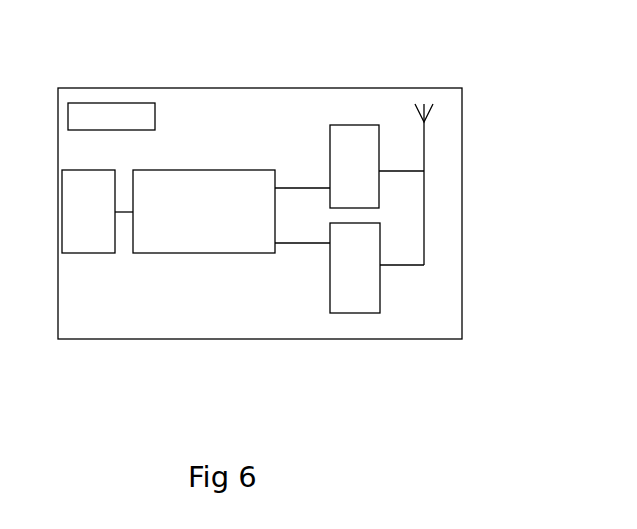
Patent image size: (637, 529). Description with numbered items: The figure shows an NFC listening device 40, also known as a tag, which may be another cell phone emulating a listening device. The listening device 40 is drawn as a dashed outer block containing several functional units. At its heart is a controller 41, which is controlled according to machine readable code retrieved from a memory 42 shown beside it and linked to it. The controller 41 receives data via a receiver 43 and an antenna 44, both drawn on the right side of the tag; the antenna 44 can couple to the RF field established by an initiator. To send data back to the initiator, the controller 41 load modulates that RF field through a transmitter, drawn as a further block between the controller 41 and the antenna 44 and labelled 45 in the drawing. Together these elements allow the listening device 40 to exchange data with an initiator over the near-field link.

The NFC listening device 40 is at (260, 248).
The controller 41 is at (231, 149).
The memory 42 is at (73, 284).
The receiver 43 is at (395, 311).
The antenna 44 is at (481, 184).
The power supply / rectifier unit 45 is at (395, 109).